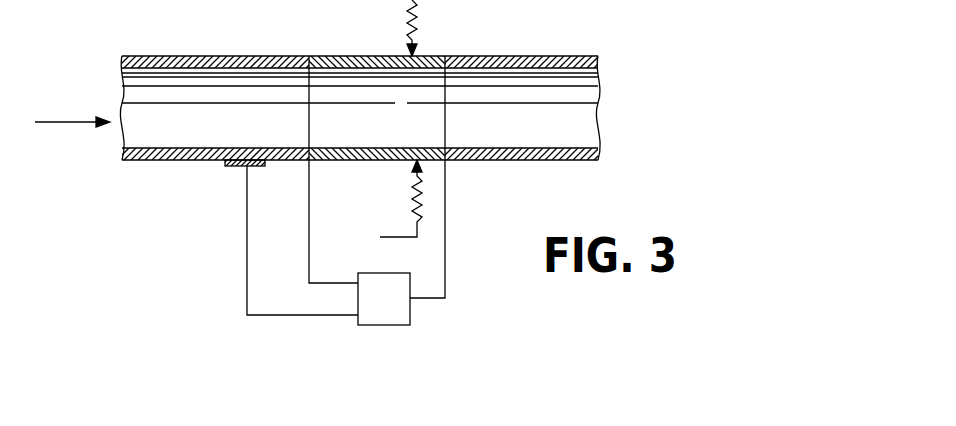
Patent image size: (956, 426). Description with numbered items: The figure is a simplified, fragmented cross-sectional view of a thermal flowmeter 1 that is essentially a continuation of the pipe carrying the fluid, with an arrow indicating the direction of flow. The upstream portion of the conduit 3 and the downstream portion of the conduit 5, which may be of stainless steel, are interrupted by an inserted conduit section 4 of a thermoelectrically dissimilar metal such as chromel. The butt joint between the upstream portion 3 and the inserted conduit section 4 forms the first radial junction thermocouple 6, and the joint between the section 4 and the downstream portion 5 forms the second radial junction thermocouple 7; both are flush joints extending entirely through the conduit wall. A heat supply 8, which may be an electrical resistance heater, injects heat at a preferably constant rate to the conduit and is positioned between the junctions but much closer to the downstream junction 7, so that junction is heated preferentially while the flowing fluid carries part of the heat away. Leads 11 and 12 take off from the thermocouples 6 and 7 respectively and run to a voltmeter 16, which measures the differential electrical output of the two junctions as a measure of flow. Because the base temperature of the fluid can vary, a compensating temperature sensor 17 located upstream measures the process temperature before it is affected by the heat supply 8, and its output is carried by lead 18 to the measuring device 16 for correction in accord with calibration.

The flowmeter 1 is at (567, 173).
The upstream portion of the conduit 3 is at (218, 56).
The inserted conduit section 4 is at (364, 56).
The downstream portion of the conduit 5 is at (547, 55).
The first radial junction thermocouple 6 is at (309, 56).
The second radial junction thermocouple 7 is at (446, 73).
The heat supply 8 is at (427, 27).
The lead 11 is at (311, 209).
The lead 12 is at (447, 269).
The voltmeter 16 is at (348, 298).
The compensating temperature sensor 17 is at (228, 168).
The lead 18 is at (247, 285).